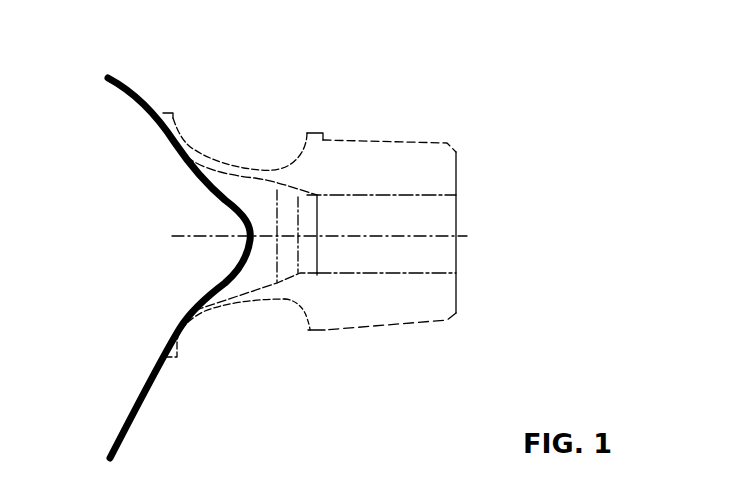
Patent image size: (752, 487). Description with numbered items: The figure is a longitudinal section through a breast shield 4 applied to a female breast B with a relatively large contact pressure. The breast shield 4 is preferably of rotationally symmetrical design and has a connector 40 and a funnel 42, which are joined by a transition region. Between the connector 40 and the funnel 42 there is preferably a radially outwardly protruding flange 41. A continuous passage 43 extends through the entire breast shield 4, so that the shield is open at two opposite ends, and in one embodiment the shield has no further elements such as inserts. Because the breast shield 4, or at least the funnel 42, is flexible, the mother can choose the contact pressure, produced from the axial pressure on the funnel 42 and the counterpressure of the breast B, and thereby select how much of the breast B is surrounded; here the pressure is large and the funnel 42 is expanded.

The female breast B is at (110, 77).
The breast shield 4 is at (362, 110).
The connector 40 is at (373, 317).
The flange 41 is at (313, 333).
The funnel 42 is at (230, 312).
The continuous passage 43 is at (445, 225).